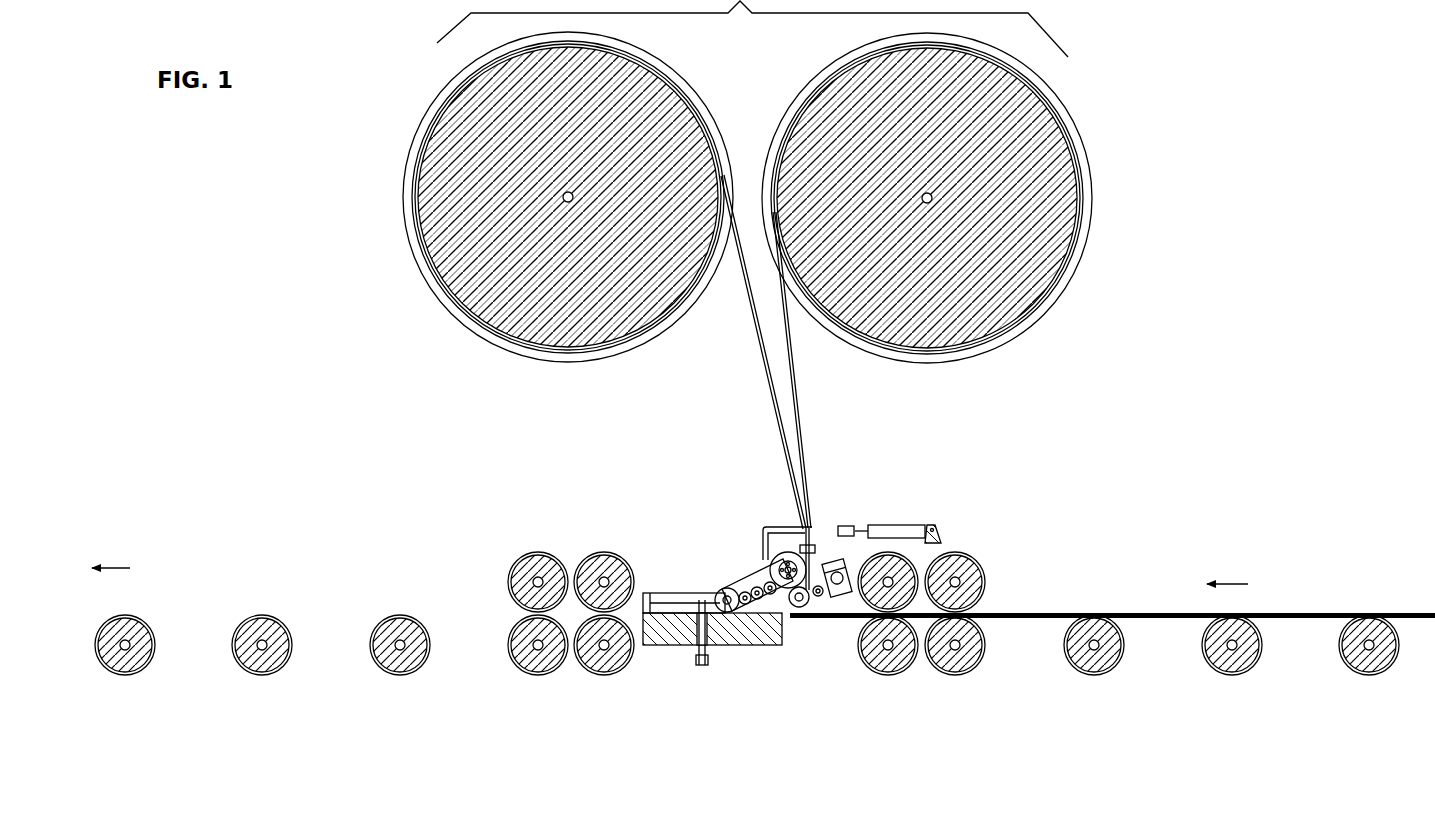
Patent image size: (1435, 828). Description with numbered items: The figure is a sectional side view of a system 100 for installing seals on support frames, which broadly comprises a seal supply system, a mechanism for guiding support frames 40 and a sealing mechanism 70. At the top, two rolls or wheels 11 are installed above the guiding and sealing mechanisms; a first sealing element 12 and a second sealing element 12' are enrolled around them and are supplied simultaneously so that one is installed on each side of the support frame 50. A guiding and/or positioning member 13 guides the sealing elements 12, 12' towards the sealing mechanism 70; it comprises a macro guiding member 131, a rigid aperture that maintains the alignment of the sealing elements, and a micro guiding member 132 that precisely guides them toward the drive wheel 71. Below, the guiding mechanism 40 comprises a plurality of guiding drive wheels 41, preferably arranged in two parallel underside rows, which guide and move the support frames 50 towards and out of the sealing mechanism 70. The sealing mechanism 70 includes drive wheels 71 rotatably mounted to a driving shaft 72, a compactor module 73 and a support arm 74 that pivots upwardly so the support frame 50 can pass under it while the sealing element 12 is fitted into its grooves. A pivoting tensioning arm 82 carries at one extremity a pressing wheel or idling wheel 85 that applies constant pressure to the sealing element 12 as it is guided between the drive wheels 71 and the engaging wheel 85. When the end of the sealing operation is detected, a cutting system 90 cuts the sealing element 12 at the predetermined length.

The system for installing seals on support frames 100 is at (1133, 184).
The rolls or wheels 11 is at (847, 103).
The first sealing element 12 is at (749, 352).
The second sealing element 12' is at (817, 370).
The guiding and/or positioning member 13 is at (867, 501).
The macro guiding member 131 is at (790, 523).
The micro guiding member 132 is at (820, 537).
The mechanism for guiding support frames 40 is at (635, 548).
The guiding drive wheels 41 is at (112, 676).
The support frame 50 is at (1050, 624).
The sealing mechanism 70 is at (633, 713).
The drive wheels 71 is at (763, 540).
The driving shaft 72 is at (785, 566).
The compactor module 73 is at (748, 592).
The support arm 74 is at (740, 588).
The pivoting tensioning arm 82 is at (843, 603).
The pressing wheel or idling wheel 85 is at (793, 607).
The cutting system 90 is at (697, 665).